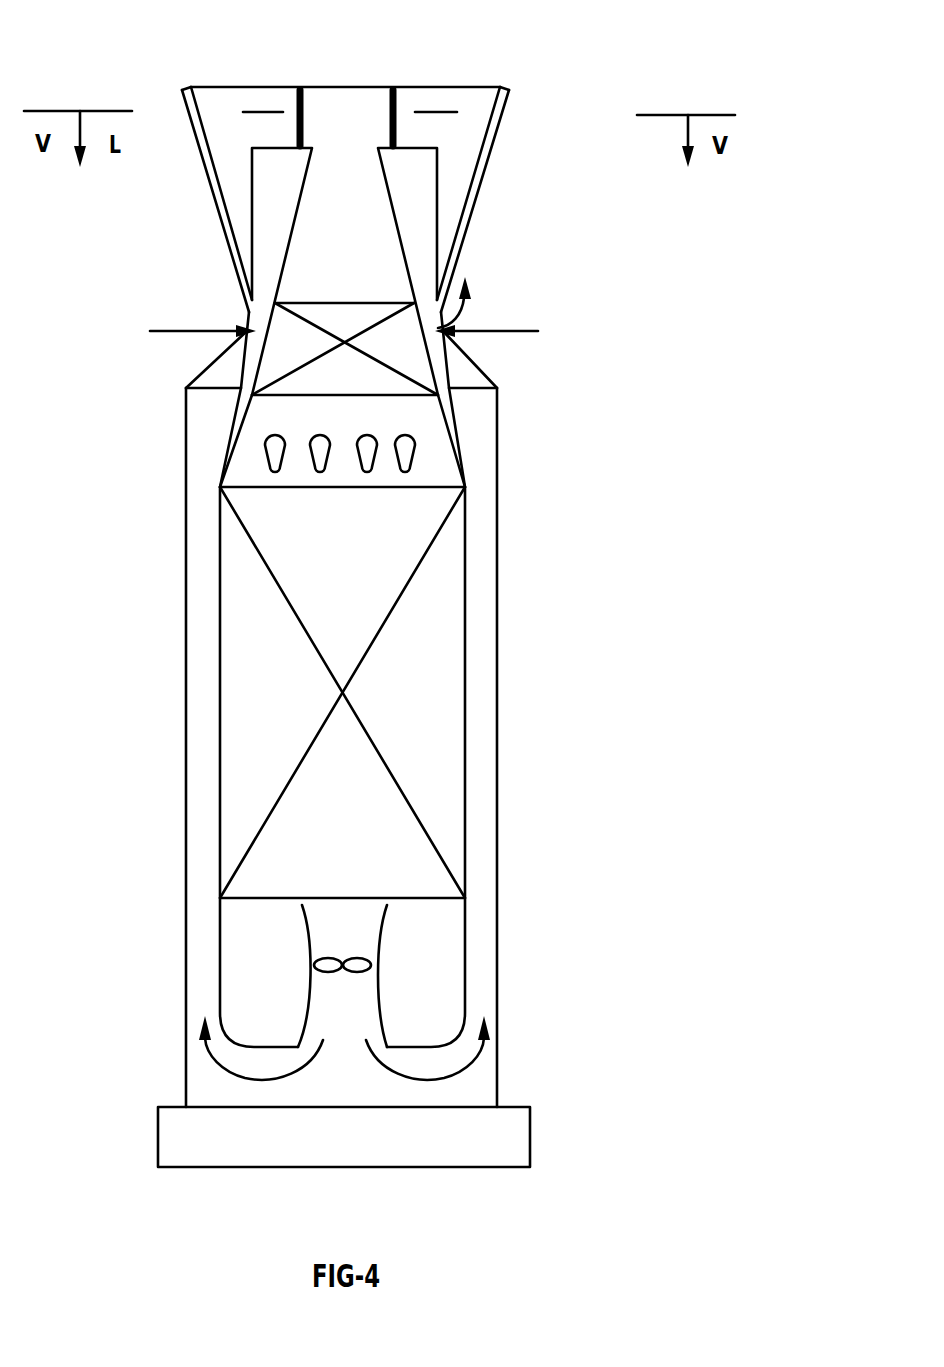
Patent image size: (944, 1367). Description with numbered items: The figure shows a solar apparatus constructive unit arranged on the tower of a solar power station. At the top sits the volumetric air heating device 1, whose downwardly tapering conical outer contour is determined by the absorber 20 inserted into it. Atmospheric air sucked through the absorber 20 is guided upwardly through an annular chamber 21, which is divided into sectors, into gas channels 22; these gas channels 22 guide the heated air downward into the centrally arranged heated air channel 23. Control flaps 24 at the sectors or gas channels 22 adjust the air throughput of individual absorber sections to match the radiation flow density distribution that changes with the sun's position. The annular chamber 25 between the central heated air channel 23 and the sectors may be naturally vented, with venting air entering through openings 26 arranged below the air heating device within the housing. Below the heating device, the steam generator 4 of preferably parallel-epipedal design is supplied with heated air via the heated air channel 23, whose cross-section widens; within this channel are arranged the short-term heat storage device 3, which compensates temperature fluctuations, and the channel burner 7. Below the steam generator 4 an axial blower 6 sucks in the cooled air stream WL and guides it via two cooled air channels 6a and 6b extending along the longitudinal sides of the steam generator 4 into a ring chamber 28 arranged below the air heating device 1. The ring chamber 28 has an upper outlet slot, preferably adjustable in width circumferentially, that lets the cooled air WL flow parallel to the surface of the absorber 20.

The air heating device 1 is at (500, 175).
The short-term heat storage device 3 is at (355, 388).
The steam generator 4 is at (466, 645).
The axial blower 6 is at (343, 975).
The cooled air channel 6a is at (198, 753).
The cooled air channel 6b is at (483, 745).
The channel burner 7 is at (405, 450).
The absorber 20 is at (212, 196).
The annular chamber 21 is at (240, 213).
The gas channels 22 is at (217, 100).
The heated air channel 23 is at (352, 258).
The control flaps 24 is at (303, 100).
The annular chamber 25 is at (420, 180).
The openings 26 is at (523, 335).
The ring chamber 28 is at (222, 369).
The cooled air stream WL is at (468, 297).